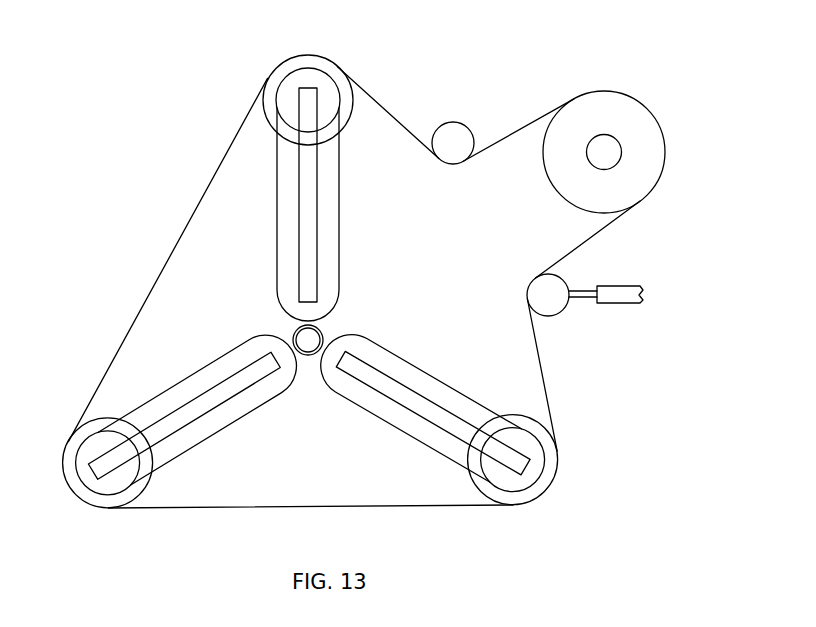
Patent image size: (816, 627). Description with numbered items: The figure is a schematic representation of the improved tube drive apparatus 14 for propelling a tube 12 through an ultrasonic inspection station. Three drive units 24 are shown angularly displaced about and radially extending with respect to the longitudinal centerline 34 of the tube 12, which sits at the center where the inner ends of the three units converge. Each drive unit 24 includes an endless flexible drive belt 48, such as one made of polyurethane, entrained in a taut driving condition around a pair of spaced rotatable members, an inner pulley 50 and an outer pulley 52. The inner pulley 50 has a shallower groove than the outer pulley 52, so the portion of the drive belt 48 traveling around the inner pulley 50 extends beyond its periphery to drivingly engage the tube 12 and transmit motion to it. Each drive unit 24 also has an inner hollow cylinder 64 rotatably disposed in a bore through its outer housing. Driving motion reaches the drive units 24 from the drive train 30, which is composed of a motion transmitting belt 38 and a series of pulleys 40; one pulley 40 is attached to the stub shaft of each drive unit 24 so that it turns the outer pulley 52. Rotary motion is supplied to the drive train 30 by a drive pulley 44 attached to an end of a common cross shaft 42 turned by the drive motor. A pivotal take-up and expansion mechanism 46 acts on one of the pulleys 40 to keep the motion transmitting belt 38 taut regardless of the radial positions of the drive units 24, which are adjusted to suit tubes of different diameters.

The tube 12 is at (275, 365).
The tube drive apparatus 14 is at (198, 88).
The drive unit 24 is at (307, 322).
The drive train 30 is at (636, 311).
The longitudinal centerline 34 is at (308, 340).
The motion transmitting belt 38 is at (540, 352).
The pulley 40 is at (325, 282).
The cross shaft 42 is at (617, 142).
The drive pulley 44 is at (635, 160).
The pivotal take-up and expansion mechanism 46 is at (594, 273).
The drive belt 48 is at (277, 195).
The inner rotatable pulley 50 is at (290, 275).
The outer rotatable pulley 52 is at (302, 80).
The inner hollow cylinder 64 is at (317, 205).